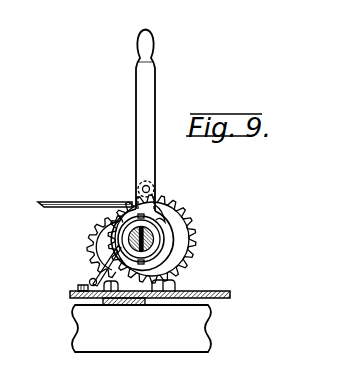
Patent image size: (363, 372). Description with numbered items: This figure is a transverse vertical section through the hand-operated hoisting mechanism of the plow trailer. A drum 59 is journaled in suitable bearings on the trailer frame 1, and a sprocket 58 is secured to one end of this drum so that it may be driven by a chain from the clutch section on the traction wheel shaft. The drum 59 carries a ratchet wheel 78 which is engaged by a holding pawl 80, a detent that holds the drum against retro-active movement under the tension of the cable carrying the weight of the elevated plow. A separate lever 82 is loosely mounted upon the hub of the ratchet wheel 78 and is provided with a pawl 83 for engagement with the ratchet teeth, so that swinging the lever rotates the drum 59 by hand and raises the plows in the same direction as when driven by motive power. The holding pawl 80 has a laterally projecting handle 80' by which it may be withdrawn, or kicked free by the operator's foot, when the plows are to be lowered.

The trailer frame 1 is at (82, 305).
The sprocket 58 is at (191, 261).
The drum 59 is at (100, 232).
The ratchet wheel 78 is at (182, 241).
The holding pawl 80 is at (91, 266).
The laterally projecting handle 80' is at (70, 279).
The lever 82 is at (137, 127).
The pawl 83 is at (160, 209).